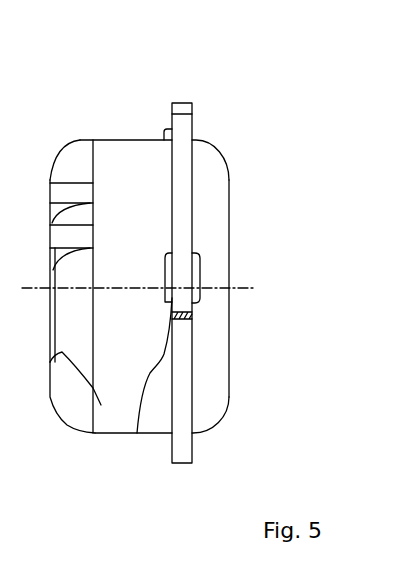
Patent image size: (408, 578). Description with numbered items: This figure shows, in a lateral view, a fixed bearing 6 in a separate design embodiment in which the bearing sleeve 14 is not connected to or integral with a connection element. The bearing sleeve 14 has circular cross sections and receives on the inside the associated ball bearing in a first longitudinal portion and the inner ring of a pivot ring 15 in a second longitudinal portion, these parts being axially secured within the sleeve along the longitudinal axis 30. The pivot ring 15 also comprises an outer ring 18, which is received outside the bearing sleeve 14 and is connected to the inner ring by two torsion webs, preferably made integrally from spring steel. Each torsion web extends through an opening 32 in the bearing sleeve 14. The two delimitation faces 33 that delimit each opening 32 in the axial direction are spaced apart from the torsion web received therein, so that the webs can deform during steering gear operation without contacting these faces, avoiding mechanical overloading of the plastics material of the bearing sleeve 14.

The fixed bearing 6 is at (118, 110).
The bearing sleeve 14 is at (140, 162).
The pivot ring 15 is at (185, 92).
The outer ring 18 is at (182, 128).
The longitudinal axis 30 is at (262, 300).
The opening 32 is at (137, 433).
The delimitation faces 33 is at (208, 261).